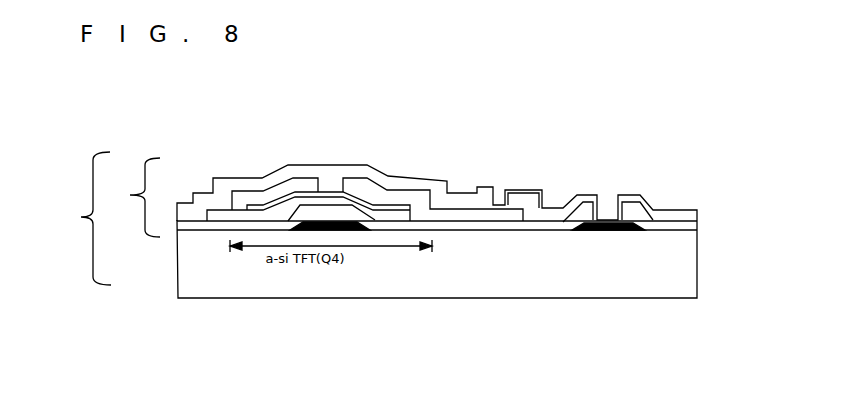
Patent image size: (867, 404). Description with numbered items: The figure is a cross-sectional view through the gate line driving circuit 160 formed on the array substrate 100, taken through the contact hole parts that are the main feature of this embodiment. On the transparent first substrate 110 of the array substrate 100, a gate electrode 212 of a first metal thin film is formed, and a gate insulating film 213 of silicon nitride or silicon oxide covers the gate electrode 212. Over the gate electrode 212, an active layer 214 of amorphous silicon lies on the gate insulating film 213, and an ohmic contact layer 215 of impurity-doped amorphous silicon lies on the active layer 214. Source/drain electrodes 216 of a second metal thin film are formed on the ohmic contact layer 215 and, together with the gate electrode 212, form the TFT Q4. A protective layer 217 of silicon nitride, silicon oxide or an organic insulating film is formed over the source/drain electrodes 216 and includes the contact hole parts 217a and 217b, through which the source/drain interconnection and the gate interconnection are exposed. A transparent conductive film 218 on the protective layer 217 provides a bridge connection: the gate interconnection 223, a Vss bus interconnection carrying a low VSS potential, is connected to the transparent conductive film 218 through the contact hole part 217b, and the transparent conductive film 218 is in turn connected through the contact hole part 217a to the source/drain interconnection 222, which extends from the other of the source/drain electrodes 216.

The array substrate 100 is at (79, 218).
The transparent first substrate 110 is at (407, 259).
The gate line driving circuit 160 is at (130, 197).
The gate electrode 212 is at (389, 291).
The gate insulating film 213 is at (462, 181).
The active layer 214 is at (315, 180).
The ohmic contact layer 215 is at (377, 167).
The source/drain electrodes 216 is at (328, 170).
The protective layer 217 is at (458, 177).
The contact hole part 217a is at (547, 173).
The contact hole part 217b is at (633, 185).
The transparent conductive film 218 is at (540, 180).
The source/drain interconnection 222 is at (576, 296).
The gate interconnection 223 is at (645, 300).